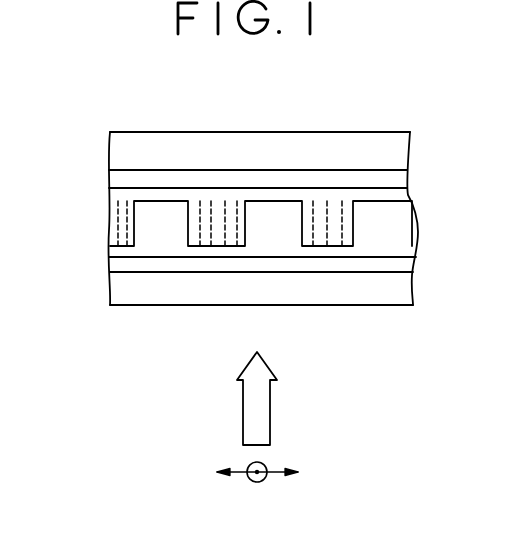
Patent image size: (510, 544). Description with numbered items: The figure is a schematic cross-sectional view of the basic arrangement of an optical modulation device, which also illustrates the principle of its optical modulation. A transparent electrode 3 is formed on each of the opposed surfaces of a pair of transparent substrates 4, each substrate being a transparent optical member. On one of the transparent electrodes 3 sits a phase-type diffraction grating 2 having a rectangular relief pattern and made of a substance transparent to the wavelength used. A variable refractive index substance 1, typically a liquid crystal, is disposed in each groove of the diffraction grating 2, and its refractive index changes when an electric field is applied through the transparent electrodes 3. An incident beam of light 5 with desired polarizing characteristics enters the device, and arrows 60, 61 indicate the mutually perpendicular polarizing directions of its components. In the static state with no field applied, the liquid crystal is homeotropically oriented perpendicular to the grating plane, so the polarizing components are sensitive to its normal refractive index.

The variable refractive index substance 1 is at (208, 233).
The diffraction grating 2 is at (400, 228).
The transparent electrode 3 is at (110, 176).
The transparent substrate 4 is at (398, 146).
The incident beam of light 5 is at (260, 421).
The arrow indicating polarizing direction 60 is at (255, 482).
The arrow indicating polarizing direction 61 is at (300, 470).